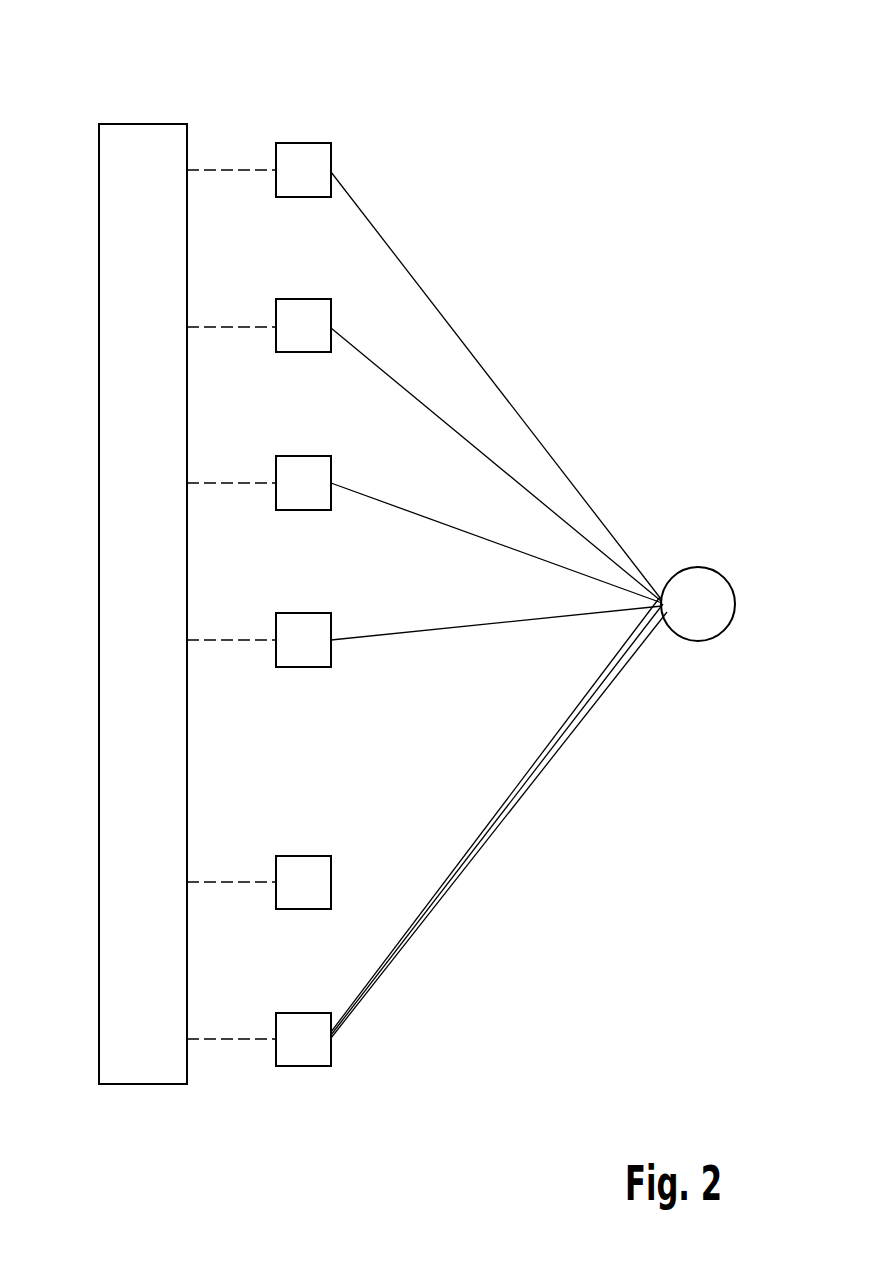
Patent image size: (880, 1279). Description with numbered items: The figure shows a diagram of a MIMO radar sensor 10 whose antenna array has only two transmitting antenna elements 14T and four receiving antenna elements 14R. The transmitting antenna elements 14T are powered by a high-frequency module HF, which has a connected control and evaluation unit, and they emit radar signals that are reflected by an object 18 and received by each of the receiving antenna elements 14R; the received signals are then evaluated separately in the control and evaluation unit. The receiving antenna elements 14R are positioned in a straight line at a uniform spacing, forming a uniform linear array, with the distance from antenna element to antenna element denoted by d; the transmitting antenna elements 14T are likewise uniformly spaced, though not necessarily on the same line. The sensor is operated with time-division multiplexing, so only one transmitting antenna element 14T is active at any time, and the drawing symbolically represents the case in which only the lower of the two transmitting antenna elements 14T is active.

The radar sensor system 10 is at (315, 98).
The receiving antenna elements 14R is at (331, 157).
The transmitting antenna elements 14T is at (331, 869).
The object 18 is at (697, 567).
The high-frequency module HF is at (98, 578).
The distance from antenna element to antenna element d is at (232, 170).